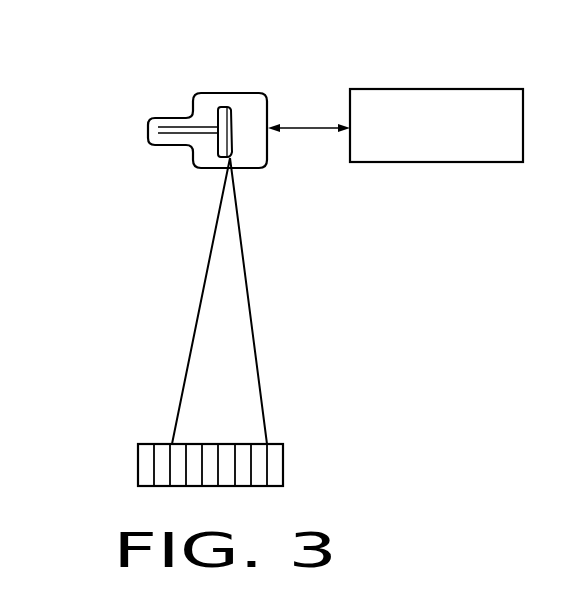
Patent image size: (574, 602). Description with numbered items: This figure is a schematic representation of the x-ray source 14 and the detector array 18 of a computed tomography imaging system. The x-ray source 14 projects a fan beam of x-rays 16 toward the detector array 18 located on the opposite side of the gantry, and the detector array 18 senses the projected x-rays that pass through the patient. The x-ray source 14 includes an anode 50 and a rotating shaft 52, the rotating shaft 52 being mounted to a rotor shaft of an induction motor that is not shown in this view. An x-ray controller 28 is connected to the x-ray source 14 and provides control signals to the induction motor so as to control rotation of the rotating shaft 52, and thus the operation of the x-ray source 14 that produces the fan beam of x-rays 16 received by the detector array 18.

The x-ray source 14 is at (166, 78).
The fan beam of x-rays 16 is at (257, 313).
The detector array 18 is at (283, 465).
The x-ray controller 28 is at (445, 89).
The anode 50 is at (223, 107).
The rotating shaft 52 is at (175, 146).